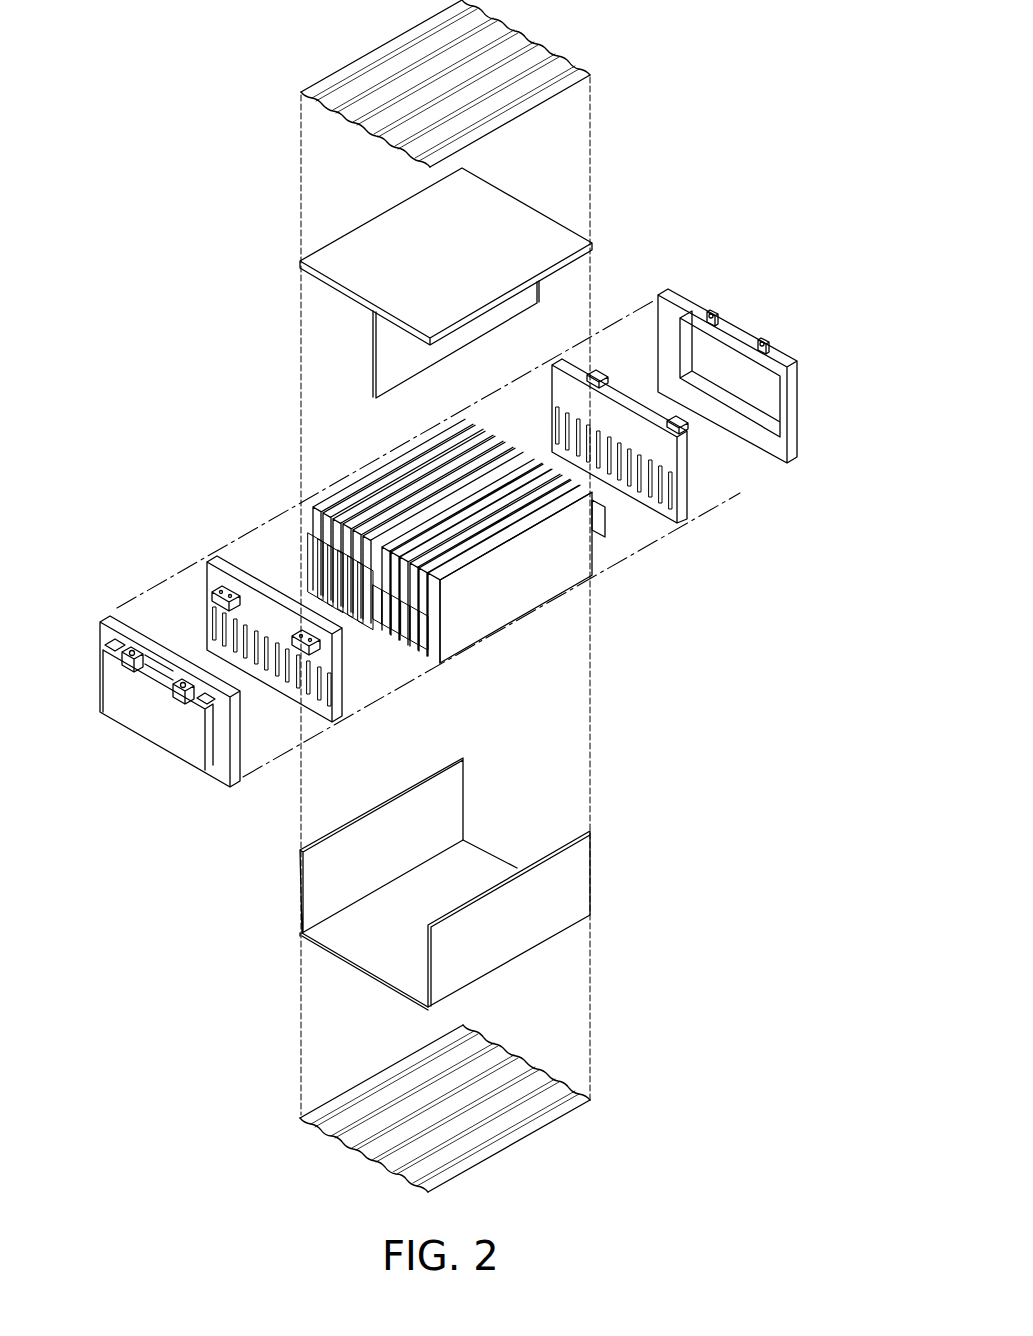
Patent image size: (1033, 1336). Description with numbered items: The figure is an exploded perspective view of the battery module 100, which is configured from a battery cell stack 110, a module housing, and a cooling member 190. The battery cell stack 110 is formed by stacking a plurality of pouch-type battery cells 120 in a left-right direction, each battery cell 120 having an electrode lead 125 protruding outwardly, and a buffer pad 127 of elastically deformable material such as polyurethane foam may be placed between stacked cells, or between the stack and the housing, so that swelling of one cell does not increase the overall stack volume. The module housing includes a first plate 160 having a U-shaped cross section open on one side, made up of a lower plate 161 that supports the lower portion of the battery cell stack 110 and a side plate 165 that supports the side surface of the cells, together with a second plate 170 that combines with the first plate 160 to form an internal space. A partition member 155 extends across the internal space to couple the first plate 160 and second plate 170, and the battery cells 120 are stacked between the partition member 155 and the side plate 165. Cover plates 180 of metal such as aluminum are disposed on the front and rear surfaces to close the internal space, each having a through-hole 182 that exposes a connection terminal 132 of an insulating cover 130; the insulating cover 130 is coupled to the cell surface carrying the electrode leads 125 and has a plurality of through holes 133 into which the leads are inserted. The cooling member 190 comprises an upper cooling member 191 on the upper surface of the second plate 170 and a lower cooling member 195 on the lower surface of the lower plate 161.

The battery module 100 is at (148, 120).
The battery cell stack 110 is at (432, 584).
The battery cell 120 is at (433, 622).
The electrode lead 125 is at (418, 653).
The buffer pad 127 is at (520, 600).
The insulating cover 130 is at (683, 525).
The connection terminal 132 is at (218, 586).
The through hole 133 is at (280, 667).
The partition member 155 is at (373, 358).
The first plate 160 is at (377, 884).
The lower plate 161 is at (325, 953).
The side plate 165 is at (300, 907).
The second plate 170 is at (328, 282).
The cover plate 180 is at (676, 300).
The through-hole 182 is at (188, 700).
The cooling member 190 is at (509, 596).
The upper cooling member 191 is at (545, 45).
The lower cooling member 195 is at (543, 1113).